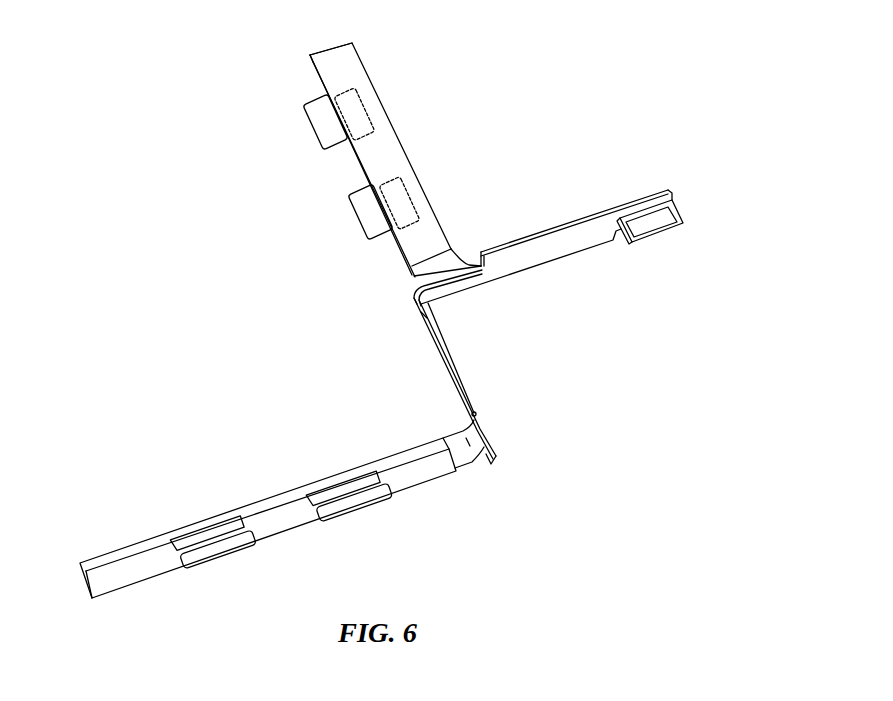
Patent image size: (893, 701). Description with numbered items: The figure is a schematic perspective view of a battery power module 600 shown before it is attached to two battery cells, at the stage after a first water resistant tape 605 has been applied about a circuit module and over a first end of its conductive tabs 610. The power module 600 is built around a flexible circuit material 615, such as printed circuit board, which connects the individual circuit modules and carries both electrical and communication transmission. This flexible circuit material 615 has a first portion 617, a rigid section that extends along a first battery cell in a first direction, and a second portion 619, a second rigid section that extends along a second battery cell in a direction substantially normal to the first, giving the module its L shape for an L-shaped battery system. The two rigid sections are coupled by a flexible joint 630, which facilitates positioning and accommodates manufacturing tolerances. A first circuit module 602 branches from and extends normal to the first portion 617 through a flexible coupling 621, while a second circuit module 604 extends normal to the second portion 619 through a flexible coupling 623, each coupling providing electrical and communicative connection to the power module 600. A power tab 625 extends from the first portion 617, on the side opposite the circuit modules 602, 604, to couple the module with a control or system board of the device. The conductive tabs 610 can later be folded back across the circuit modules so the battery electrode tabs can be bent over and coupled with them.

The battery power module 600 is at (105, 145).
The first circuit module 602 is at (413, 158).
The second circuit module 604 is at (263, 498).
The first water resistant tape 605 is at (363, 62).
The conductive tabs 610 is at (305, 118).
The flexible circuit material 615 is at (495, 242).
The first portion 617 is at (525, 263).
The second portion 619 is at (473, 393).
The flexible coupling 621 is at (410, 277).
The flexible coupling 623 is at (477, 461).
The power tab 625 is at (672, 228).
The flexible joint 630 is at (410, 297).